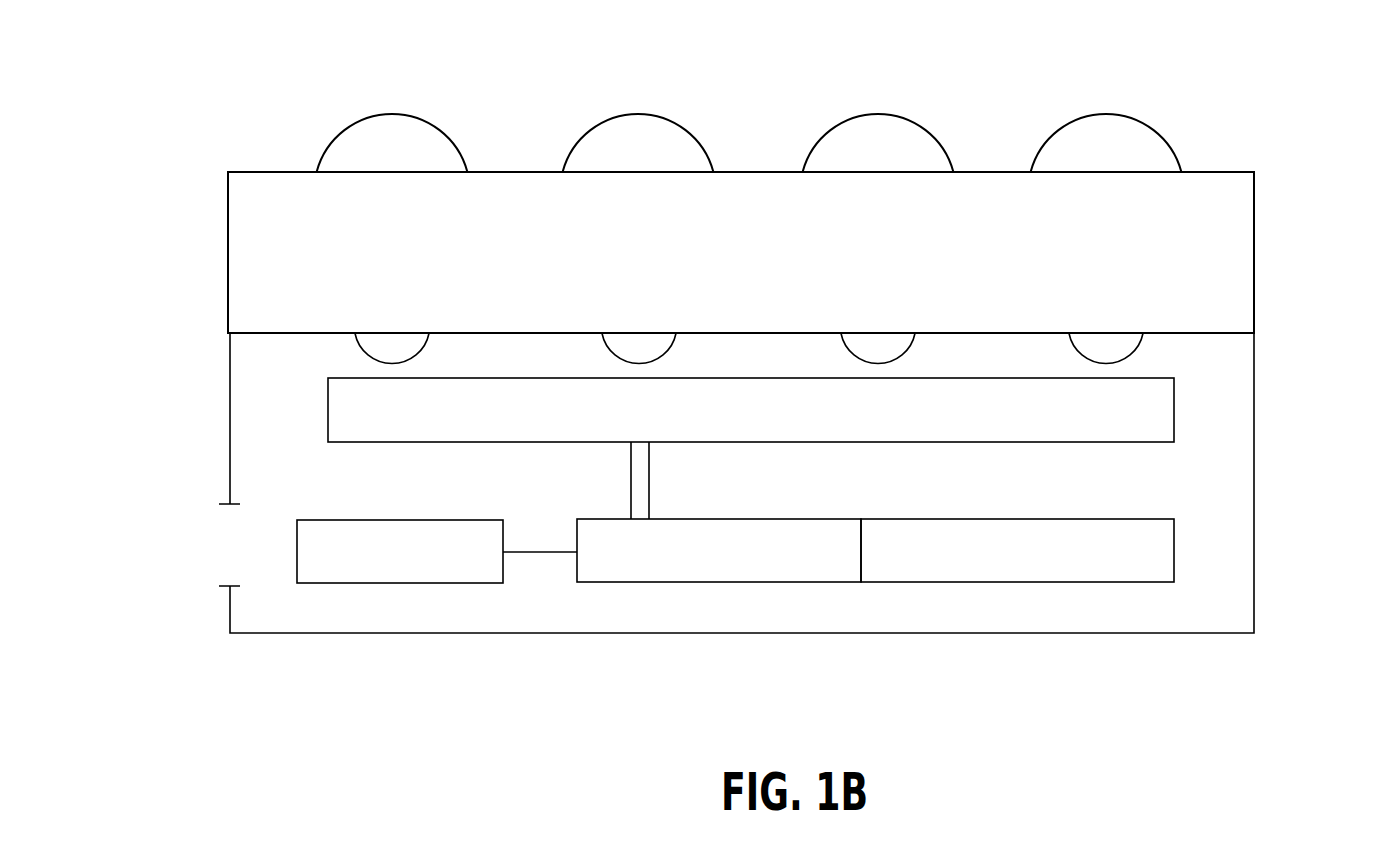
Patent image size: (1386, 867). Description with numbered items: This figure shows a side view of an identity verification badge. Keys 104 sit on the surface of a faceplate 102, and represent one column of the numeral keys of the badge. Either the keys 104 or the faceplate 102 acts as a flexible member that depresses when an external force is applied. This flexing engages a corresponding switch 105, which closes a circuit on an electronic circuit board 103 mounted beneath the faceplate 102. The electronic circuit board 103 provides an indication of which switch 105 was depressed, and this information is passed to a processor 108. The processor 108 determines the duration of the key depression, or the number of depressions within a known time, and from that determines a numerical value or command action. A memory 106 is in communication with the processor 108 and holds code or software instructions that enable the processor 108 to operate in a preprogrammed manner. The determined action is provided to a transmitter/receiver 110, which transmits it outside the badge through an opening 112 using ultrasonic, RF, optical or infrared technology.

The faceplate 102 is at (1255, 252).
The electronic circuit board 103 is at (1175, 409).
The keys 104 is at (920, 125).
The switch 105 is at (1138, 346).
The memory 106 is at (992, 582).
The processor 108 is at (710, 582).
The transmitter/receiver 110 is at (388, 583).
The opening 112 is at (219, 545).